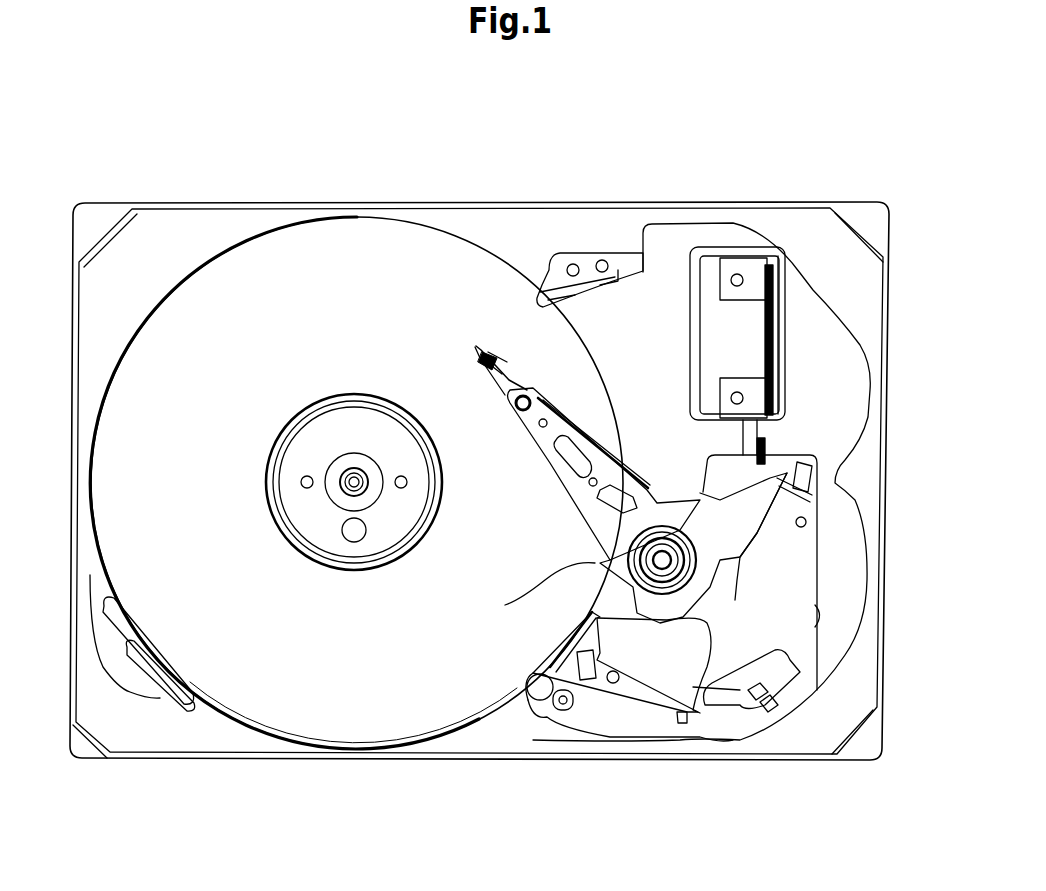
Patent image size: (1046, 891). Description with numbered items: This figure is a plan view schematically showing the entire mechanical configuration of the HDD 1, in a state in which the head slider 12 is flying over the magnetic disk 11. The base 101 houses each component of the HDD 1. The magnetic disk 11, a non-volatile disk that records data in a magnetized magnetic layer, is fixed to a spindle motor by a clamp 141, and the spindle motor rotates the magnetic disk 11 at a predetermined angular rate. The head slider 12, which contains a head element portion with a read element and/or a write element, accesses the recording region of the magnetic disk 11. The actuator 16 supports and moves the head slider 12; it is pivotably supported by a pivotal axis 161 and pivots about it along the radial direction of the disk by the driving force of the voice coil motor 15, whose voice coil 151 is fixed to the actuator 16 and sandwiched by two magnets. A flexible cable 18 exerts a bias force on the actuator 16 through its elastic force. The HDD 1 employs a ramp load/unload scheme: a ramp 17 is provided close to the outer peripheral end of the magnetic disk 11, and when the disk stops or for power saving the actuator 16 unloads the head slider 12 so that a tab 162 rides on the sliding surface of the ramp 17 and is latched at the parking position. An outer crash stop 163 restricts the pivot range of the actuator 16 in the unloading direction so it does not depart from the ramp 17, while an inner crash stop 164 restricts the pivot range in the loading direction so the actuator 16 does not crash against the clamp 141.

The HDD 1 is at (408, 107).
The base 101 is at (400, 760).
The magnetic disk 11 is at (590, 356).
The clamp 141 is at (340, 570).
The ramp 17 is at (537, 292).
The head slider 12 is at (492, 357).
The tab 162 is at (476, 348).
The actuator 16 is at (532, 455).
The pivotal axis 161 is at (627, 562).
The flexible cable 18 is at (712, 489).
The inner crash stop 164 is at (803, 520).
The voice coil motor 15 is at (602, 709).
The outer crash stop 163 is at (615, 684).
The voice coil 151 is at (693, 687).